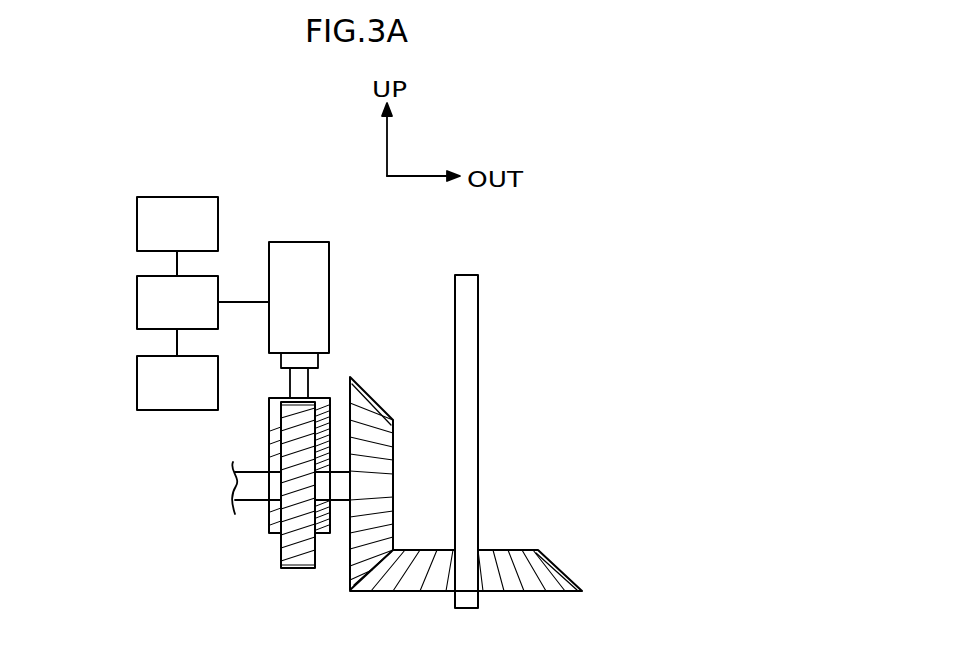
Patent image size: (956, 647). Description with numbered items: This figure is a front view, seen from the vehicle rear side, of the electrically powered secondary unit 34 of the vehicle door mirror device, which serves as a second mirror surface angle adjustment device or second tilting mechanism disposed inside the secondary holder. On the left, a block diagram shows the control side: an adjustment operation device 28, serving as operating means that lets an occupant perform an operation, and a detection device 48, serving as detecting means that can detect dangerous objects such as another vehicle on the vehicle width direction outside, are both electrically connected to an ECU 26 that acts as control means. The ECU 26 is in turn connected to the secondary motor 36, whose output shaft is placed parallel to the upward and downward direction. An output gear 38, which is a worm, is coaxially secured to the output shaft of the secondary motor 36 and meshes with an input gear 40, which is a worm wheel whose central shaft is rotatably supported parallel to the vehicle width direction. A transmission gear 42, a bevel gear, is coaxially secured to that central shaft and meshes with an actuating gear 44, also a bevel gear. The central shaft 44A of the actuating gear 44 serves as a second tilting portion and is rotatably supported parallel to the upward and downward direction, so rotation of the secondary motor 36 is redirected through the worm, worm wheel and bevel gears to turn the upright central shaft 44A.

The adjustment operation device 28 is at (137, 224).
The ECU 26 is at (137, 301).
The detection device 48 is at (137, 377).
The secondary motor 36 is at (329, 268).
The output gear 38 is at (269, 437).
The input gear 40 is at (288, 568).
The transmission gear 42 is at (373, 400).
The actuating gear 44 is at (553, 560).
The central shaft 44A is at (480, 385).
The secondary unit 34 is at (518, 423).